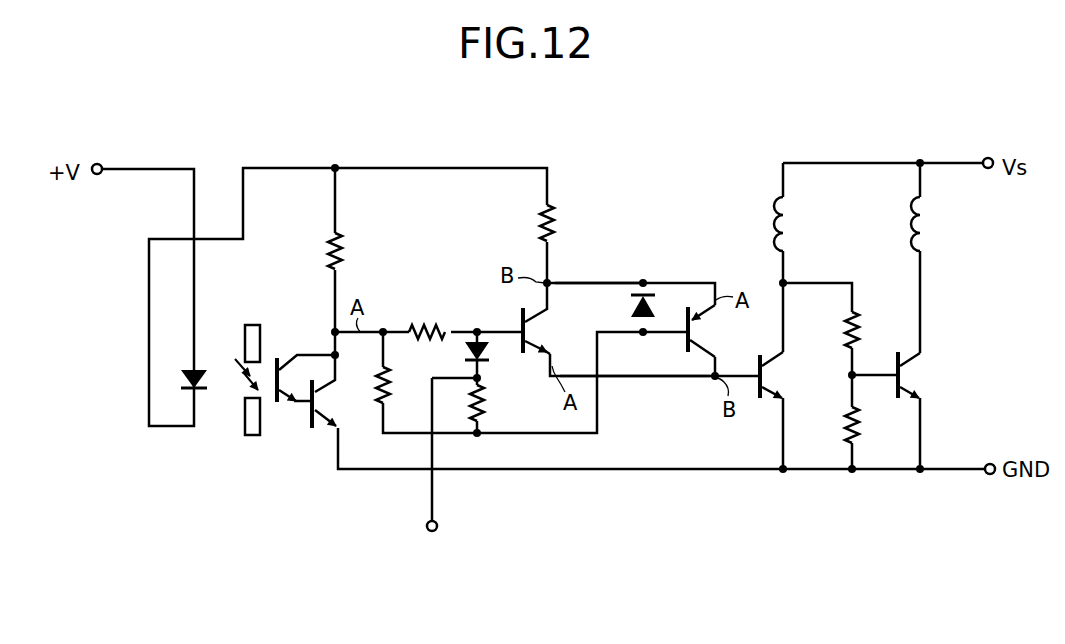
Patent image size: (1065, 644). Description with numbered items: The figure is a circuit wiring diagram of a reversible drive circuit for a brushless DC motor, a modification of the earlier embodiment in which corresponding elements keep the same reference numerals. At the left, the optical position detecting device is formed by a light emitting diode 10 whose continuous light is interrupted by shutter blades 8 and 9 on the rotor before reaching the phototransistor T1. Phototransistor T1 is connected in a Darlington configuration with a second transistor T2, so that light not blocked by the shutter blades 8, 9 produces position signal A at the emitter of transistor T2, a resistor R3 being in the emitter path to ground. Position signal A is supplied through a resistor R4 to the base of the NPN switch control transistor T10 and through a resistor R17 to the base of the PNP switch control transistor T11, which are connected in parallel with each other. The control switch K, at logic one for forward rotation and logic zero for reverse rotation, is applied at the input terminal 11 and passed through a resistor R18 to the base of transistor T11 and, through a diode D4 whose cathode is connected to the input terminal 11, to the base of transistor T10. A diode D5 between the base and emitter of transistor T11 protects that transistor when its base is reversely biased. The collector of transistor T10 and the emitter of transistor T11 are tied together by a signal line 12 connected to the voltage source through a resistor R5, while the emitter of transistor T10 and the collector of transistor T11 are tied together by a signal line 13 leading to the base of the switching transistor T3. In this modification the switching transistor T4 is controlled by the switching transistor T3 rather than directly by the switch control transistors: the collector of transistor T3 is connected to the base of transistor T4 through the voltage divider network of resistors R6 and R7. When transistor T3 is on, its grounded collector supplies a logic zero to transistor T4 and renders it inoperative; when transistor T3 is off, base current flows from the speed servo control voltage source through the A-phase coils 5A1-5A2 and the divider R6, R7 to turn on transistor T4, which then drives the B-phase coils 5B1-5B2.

The shutter blade 8 is at (251, 325).
The shutter blade 9 is at (251, 435).
The light emitting diode 10 is at (181, 380).
The input terminal 11 is at (432, 532).
The signal line 12 is at (588, 283).
The signal line 13 is at (648, 378).
The A-phase coils 5A1-5A2 is at (831, 224).
The B-phase coils 5B1-5B2 is at (925, 220).
The resistor R3 is at (328, 243).
The resistor R4 is at (428, 330).
The resistor R5 is at (544, 209).
The resistor R6 is at (848, 318).
The resistor R7 is at (847, 412).
The resistor R17 is at (390, 380).
The resistor R18 is at (484, 400).
The diode D4 is at (482, 336).
The diode D5 is at (640, 298).
The phototransistor T1 is at (279, 367).
The second transistor T2 is at (318, 402).
The switching transistor T3 is at (763, 376).
The switching transistor T4 is at (902, 375).
The NPN switch control transistor T10 is at (530, 332).
The PNP switch control transistor T11 is at (692, 331).
The control switch K is at (434, 497).